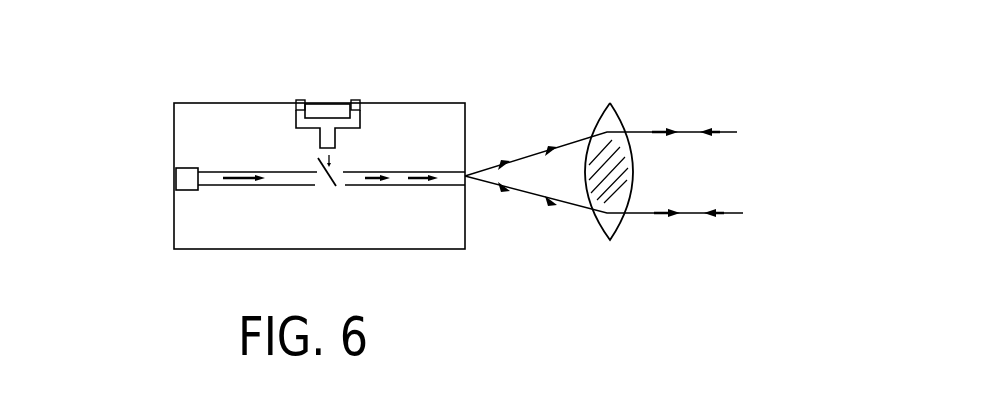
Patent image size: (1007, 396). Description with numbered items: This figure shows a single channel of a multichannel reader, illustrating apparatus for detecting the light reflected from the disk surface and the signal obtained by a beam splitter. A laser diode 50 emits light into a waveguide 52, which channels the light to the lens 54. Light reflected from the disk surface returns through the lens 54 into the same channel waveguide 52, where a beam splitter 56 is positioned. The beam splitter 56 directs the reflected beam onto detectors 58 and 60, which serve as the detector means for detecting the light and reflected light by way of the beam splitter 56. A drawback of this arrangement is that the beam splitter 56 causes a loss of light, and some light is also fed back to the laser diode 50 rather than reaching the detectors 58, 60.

The laser diode 50 is at (173, 183).
The waveguide 52 is at (230, 170).
The lens 54 is at (598, 129).
The beam splitter 56 is at (327, 190).
The detector 58 is at (302, 100).
The detector 60 is at (355, 100).